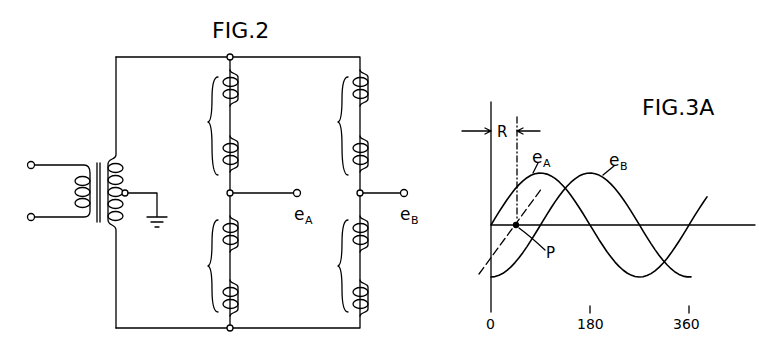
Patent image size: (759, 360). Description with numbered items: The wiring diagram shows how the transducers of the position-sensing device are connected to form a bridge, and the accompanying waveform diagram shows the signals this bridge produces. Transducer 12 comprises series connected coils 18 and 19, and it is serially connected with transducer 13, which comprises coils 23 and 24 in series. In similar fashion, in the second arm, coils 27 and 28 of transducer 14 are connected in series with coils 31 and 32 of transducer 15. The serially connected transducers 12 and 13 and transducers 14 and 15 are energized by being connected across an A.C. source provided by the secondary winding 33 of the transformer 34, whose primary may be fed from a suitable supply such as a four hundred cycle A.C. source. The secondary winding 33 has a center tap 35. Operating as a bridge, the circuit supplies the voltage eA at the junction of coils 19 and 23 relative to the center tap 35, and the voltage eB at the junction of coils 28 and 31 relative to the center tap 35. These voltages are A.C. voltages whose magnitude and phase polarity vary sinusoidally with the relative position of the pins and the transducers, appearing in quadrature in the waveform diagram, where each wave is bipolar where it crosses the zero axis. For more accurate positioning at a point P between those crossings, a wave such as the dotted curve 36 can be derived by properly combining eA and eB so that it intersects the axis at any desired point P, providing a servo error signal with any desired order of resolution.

In FIG. 2, the transducer 12 is at (230, 122).
In FIG. 2, the transducer 13 is at (230, 266).
In FIG. 2, the transducer 14 is at (357, 122).
In FIG. 2, the transducer 15 is at (357, 266).
In FIG. 2, the coil 18 is at (240, 83).
In FIG. 2, the coil 19 is at (240, 150).
In FIG. 2, the coil 23 is at (240, 230).
In FIG. 2, the coil 24 is at (240, 294).
In FIG. 2, the coil 27 is at (370, 83).
In FIG. 2, the coil 28 is at (370, 151).
In FIG. 2, the coil 31 is at (370, 231).
In FIG. 2, the coil 32 is at (370, 294).
In FIG. 2, the secondary winding 33 is at (106, 157).
In FIG. 2, the transformer 34 is at (98, 227).
In FIG. 2, the center tap 35 is at (130, 190).
In FIG. 3A, the dotted curve 36 is at (499, 247).